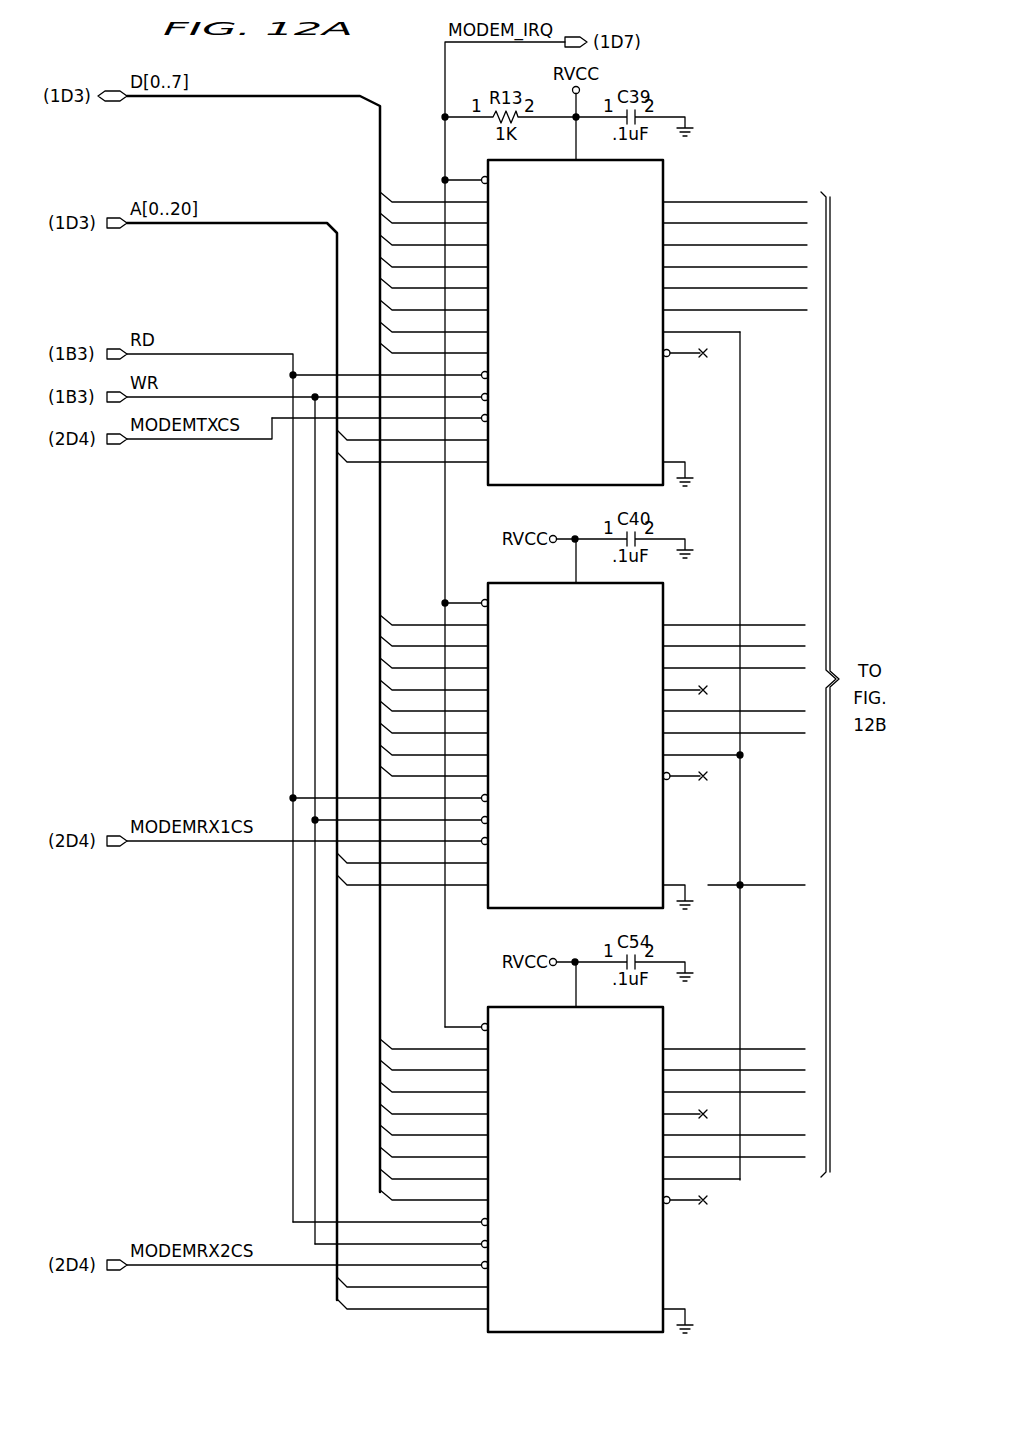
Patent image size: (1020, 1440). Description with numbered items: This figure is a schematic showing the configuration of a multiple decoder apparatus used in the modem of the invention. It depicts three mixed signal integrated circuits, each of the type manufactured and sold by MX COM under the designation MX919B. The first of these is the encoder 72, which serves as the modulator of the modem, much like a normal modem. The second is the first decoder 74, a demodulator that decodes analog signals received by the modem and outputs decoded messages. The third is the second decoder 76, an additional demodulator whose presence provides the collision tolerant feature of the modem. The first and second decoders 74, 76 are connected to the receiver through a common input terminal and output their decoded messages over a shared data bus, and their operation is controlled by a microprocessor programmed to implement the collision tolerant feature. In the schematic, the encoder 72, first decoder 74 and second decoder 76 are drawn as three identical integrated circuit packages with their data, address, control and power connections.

The encoder 72 is at (590, 467).
The first decoder 74 is at (466, 724).
The second decoder 76 is at (466, 1148).